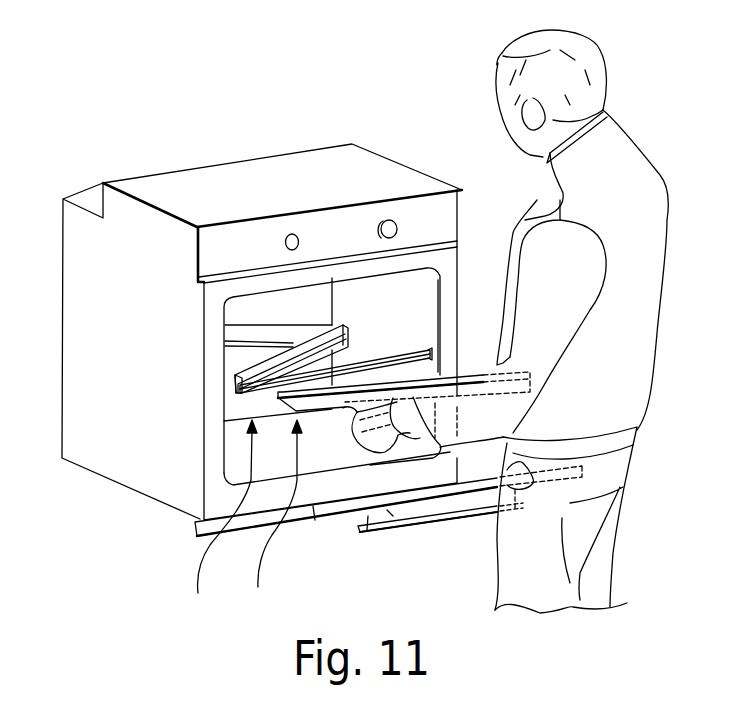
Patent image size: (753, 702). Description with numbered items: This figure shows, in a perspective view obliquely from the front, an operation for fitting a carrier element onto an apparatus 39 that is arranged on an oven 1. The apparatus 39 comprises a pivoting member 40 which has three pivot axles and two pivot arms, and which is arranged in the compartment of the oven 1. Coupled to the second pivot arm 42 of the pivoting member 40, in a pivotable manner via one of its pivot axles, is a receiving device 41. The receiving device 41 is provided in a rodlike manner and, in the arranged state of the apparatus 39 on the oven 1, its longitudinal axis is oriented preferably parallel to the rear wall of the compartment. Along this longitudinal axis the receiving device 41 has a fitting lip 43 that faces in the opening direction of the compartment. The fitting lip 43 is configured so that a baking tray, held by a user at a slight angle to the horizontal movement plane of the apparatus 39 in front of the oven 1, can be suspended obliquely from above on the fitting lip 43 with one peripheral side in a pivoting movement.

The oven 1 is at (124, 507).
The apparatus variant 39 is at (222, 521).
The pivoting member 40 is at (273, 517).
The receiving device 41 is at (420, 350).
The second pivot arm 42 is at (305, 353).
The fitting lip 43 is at (370, 363).